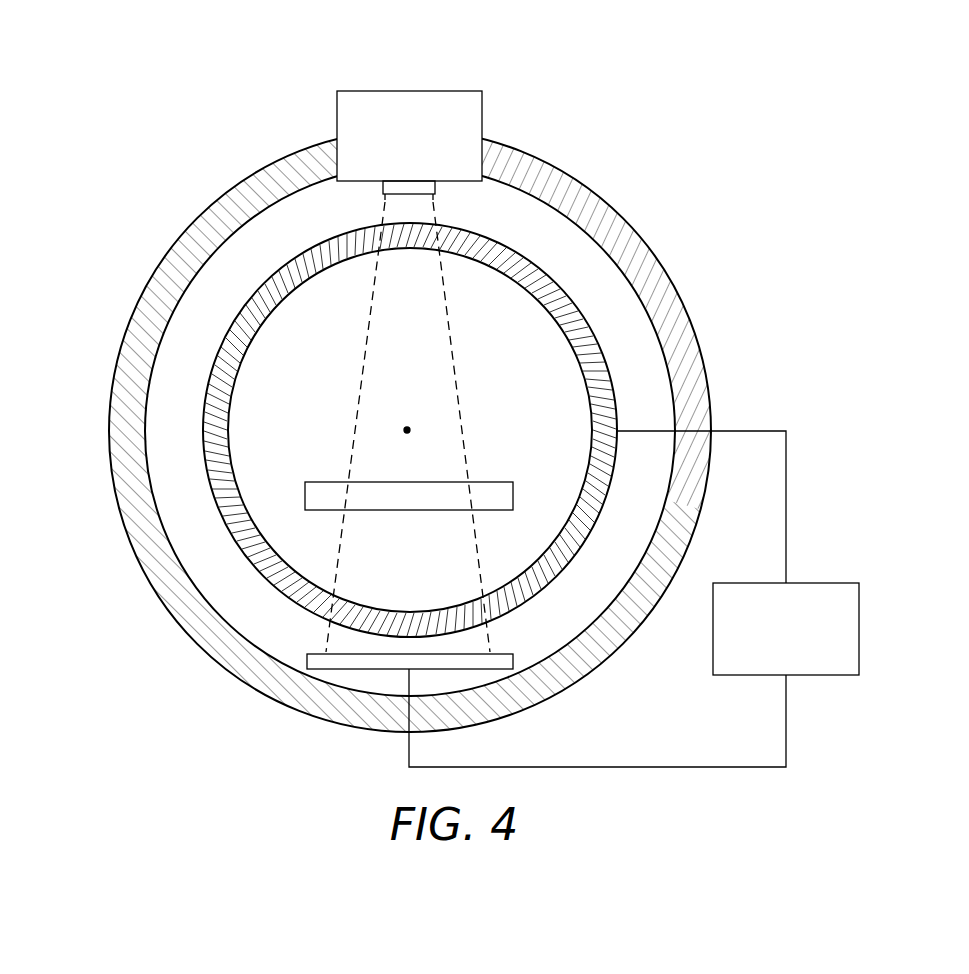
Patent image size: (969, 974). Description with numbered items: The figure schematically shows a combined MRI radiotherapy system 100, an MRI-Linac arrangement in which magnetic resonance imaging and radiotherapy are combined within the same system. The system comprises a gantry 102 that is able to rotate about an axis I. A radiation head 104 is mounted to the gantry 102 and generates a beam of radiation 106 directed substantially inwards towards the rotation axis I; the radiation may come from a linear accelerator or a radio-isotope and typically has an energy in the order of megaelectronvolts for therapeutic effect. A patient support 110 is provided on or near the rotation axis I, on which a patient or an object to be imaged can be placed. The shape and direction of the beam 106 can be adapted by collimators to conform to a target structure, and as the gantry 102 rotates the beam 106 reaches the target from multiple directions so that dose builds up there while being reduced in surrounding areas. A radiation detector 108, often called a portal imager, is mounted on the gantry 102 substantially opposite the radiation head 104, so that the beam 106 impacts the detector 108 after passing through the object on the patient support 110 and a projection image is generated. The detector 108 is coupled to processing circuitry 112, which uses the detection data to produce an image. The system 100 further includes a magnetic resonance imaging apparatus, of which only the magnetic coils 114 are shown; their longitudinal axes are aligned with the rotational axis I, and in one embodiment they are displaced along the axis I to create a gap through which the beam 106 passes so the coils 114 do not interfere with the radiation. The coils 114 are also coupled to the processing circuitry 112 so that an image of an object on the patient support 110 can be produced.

The combined MRI radiotherapy system 100 is at (117, 212).
The gantry 102 is at (627, 220).
The radiation head 104 is at (450, 90).
The beam of radiation 106 is at (357, 364).
The radiation detector 108 is at (335, 672).
The patient support 110 is at (490, 482).
The processing circuitry 112 is at (828, 583).
The magnetic coils 114 is at (215, 485).
The rotation axis I is at (407, 427).